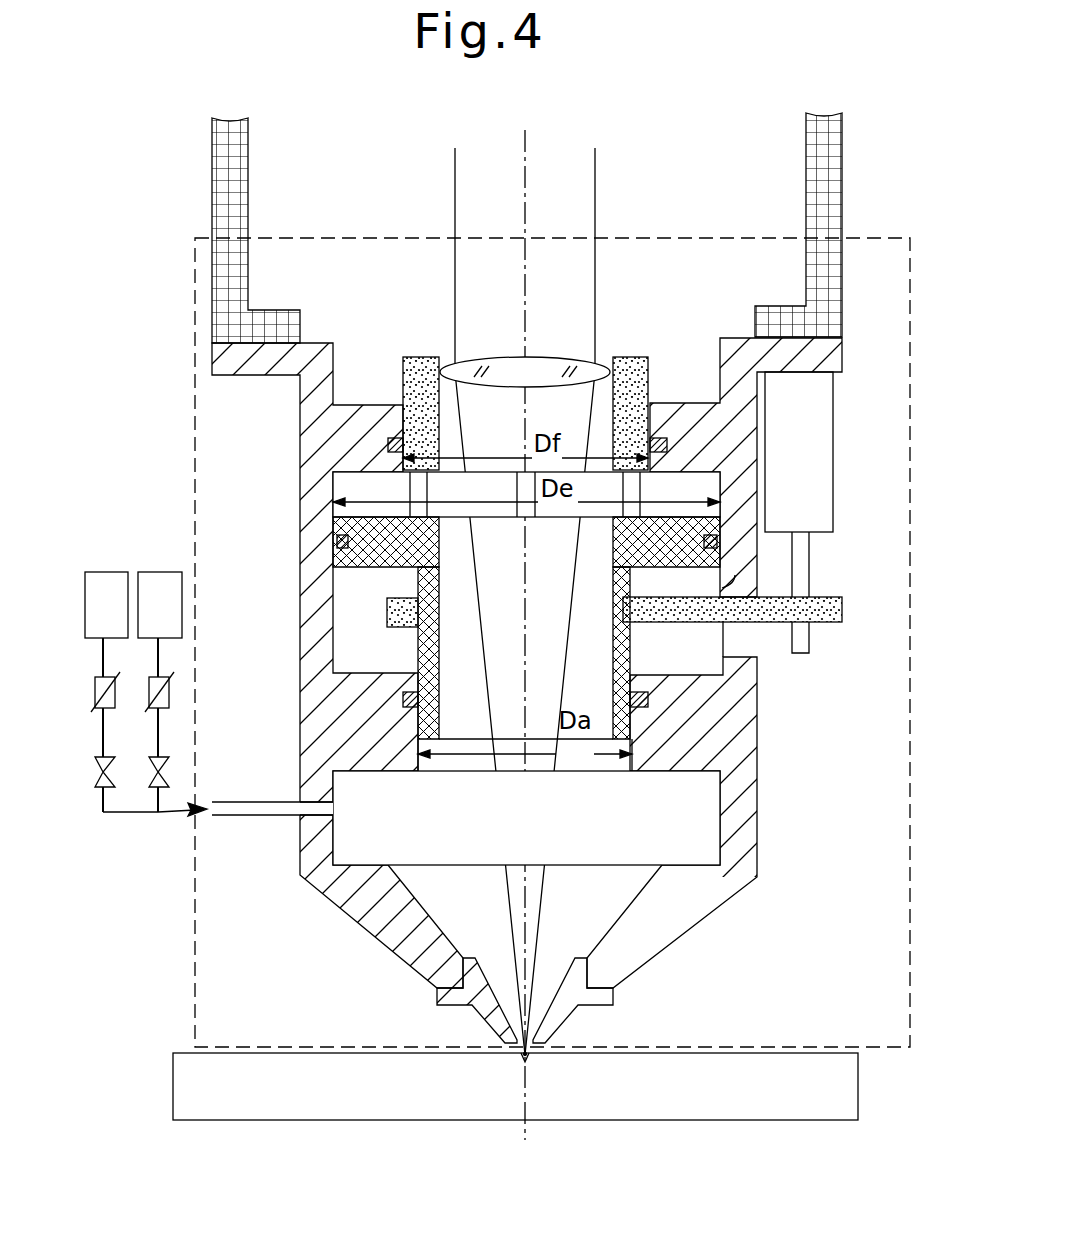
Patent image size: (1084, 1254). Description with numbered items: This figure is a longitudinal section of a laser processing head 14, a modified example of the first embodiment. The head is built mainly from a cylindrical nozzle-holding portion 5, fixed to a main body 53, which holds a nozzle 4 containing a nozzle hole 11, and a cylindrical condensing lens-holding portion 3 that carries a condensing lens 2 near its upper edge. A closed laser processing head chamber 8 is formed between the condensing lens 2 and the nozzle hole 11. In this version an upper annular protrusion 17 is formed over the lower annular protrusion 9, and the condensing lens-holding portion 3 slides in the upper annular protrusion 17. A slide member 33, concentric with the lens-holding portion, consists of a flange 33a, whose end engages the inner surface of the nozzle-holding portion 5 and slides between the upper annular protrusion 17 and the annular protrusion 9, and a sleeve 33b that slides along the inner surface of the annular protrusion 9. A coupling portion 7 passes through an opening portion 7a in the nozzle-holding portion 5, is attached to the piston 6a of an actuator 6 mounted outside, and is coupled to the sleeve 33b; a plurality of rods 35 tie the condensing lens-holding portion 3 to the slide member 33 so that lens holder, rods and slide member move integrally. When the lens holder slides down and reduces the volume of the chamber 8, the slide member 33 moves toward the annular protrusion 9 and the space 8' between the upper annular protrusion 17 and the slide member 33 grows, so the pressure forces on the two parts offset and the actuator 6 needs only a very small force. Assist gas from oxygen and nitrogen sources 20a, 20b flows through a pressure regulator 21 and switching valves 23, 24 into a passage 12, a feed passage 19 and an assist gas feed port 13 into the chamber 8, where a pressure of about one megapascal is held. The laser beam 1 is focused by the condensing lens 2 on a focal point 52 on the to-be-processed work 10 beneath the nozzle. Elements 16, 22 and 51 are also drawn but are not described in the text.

The laser beam 1 is at (596, 172).
The condensing lens 2 is at (565, 357).
The condensing lens-holding portion 3 is at (634, 357).
The nozzle 4 is at (600, 1012).
The nozzle-holding portion 5 is at (728, 917).
The actuator 6 is at (818, 400).
The piston 6a is at (800, 574).
The coupling portion 7 is at (820, 610).
The opening portion 7a is at (722, 582).
The laser processing head chamber 8 is at (526, 818).
The space 8' is at (526, 493).
The annular protrusion 9 is at (373, 692).
The to-be-processed work 10 is at (660, 1105).
The nozzle hole 11 is at (517, 1055).
The passage 12 is at (155, 826).
The assist gas feed port 13 is at (320, 813).
The laser processing head 14 is at (552, 642).
The housing wall 16 is at (312, 553).
The upper annular protrusion 17 is at (370, 392).
The feed passage 19 is at (239, 818).
The assist gas source 20a is at (100, 572).
The assist gas source 20b is at (160, 572).
The pressure regulator 21 is at (95, 695).
The pressure regulator 22 is at (150, 695).
The switching valve 23 is at (95, 771).
The switching valve 24 is at (149, 771).
The slide member 33 is at (336, 527).
The flange 33a is at (397, 570).
The sleeve 33b is at (418, 645).
The rods 35 is at (413, 488).
The optical axis 51 is at (540, 148).
The focal point 52 is at (529, 1055).
The main body 53 is at (830, 166).